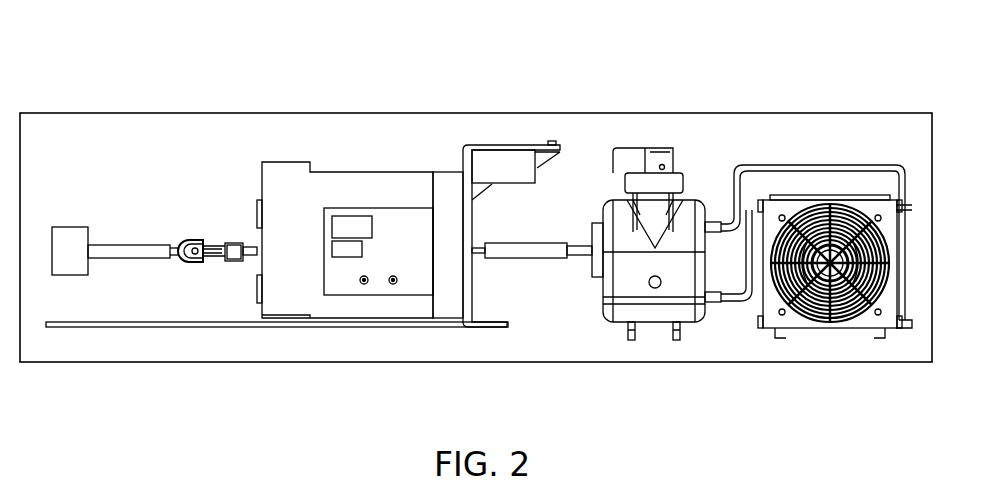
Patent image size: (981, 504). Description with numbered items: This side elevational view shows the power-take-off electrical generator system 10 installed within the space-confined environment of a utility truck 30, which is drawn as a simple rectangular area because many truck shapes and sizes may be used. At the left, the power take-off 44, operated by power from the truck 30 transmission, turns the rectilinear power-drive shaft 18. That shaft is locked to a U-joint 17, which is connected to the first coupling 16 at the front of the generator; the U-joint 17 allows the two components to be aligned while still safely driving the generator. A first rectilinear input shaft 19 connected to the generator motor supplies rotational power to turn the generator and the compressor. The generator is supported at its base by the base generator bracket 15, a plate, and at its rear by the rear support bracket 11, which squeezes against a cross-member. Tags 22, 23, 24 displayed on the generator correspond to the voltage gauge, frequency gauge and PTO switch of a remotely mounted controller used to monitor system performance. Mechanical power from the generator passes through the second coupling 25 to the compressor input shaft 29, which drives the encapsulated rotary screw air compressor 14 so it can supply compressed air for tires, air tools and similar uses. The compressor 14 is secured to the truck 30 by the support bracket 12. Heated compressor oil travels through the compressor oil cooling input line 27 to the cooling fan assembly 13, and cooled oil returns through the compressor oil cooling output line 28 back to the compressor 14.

The power-take-off electrical generator system 10 is at (656, 70).
The generator rear support bracket 11 is at (522, 145).
The support bracket 12 is at (631, 338).
The cooling fan assembly 13 is at (845, 318).
The encapsulated rotary screw air compressor 14 is at (673, 270).
The base generator bracket 15 is at (236, 327).
The first coupling 16 is at (234, 261).
The U-joint 17 is at (196, 240).
The rectilinear power-drive shaft 18 is at (156, 250).
The first rectilinear input shaft 19 is at (250, 247).
The voltage gauge tag 22 is at (339, 244).
The frequency gauge tag 23 is at (336, 257).
The PTO switch tag 24 is at (392, 284).
The second coupling 25 is at (520, 252).
The compressor oil cooling input line 27 is at (846, 165).
The compressor oil cooling output line 28 is at (745, 300).
The compressor input shaft 29 is at (588, 250).
The utility truck 30 is at (243, 113).
The power-take-off 44 is at (66, 240).